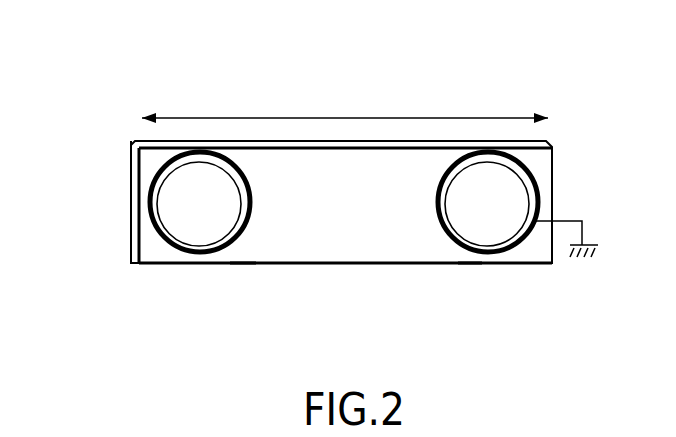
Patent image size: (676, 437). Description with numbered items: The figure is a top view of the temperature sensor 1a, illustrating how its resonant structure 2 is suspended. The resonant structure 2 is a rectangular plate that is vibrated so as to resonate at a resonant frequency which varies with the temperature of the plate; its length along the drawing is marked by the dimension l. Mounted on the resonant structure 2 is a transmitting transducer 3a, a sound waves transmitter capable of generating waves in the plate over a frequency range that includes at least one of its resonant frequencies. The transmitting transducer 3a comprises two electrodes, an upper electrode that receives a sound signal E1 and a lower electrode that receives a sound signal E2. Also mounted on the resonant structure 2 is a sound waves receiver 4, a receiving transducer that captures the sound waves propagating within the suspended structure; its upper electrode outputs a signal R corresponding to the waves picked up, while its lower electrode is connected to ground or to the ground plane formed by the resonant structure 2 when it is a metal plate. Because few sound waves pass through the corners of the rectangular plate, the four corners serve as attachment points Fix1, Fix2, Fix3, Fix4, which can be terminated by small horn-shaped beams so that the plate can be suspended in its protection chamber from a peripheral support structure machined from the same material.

The temperature sensor 1a is at (278, 102).
The resonant structure 2 is at (347, 247).
The length dimension l is at (345, 106).
The sound signal E1 is at (178, 192).
The sound signal E2 is at (213, 250).
The signal R is at (533, 192).
The transmitting transducer 3a is at (243, 280).
The sound waves receiver 4 is at (469, 280).
The attachment point Fix1 is at (130, 143).
The attachment point Fix2 is at (130, 262).
The attachment point Fix3 is at (553, 143).
The attachment point Fix4 is at (552, 263).